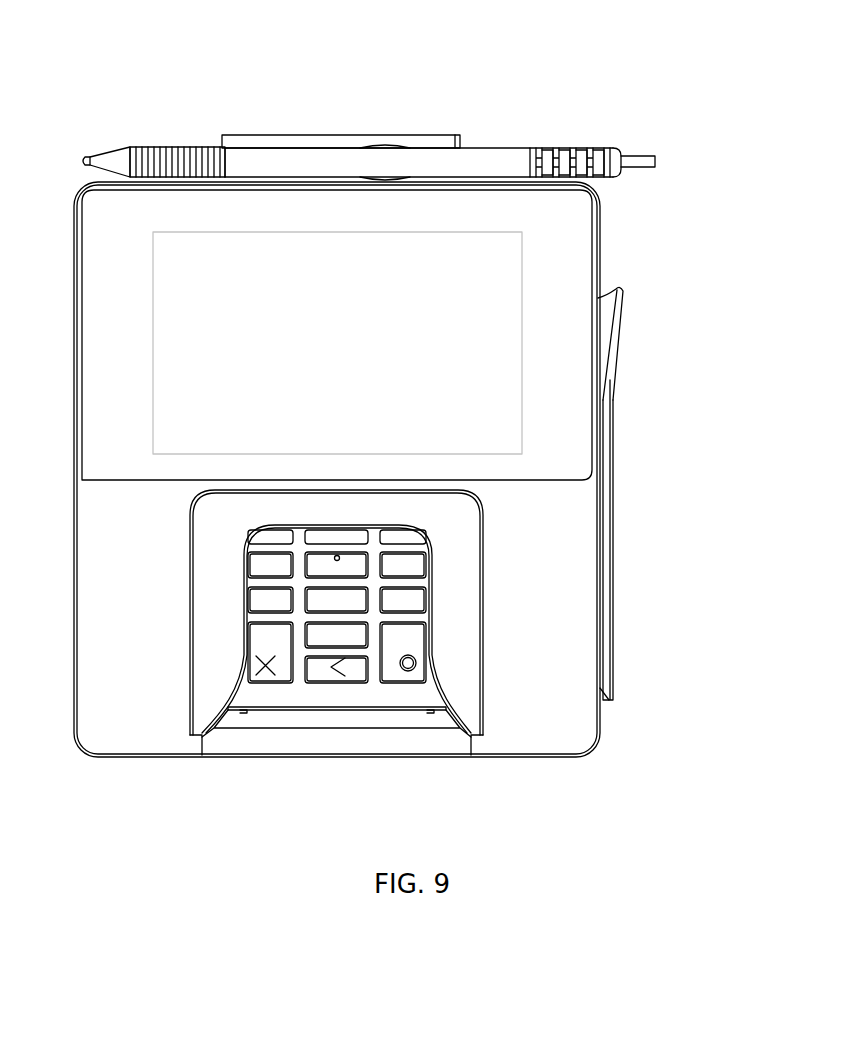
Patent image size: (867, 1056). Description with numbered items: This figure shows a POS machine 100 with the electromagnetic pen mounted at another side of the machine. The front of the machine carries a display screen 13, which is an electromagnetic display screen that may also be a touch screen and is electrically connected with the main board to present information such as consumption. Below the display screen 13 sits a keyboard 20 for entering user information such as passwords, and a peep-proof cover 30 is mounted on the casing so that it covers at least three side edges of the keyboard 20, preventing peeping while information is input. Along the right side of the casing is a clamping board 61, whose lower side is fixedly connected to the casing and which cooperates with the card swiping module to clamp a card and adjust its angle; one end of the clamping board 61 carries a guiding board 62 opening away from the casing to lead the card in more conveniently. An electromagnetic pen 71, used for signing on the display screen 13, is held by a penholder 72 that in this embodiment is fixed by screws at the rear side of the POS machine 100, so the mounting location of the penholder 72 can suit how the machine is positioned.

The POS machine 100 is at (610, 88).
The display screen 13 is at (488, 287).
The keyboard 20 is at (330, 685).
The peep-proof cover 30 is at (452, 614).
The clamping board 61 is at (612, 508).
The guiding board 62 is at (618, 324).
The electromagnetic pen 71 is at (512, 156).
The penholder 72 is at (333, 140).